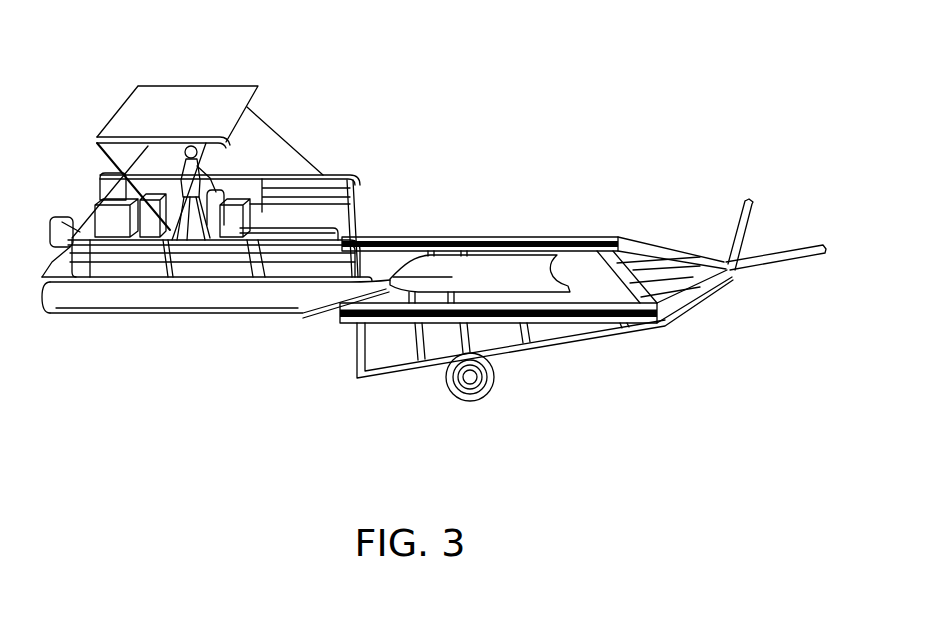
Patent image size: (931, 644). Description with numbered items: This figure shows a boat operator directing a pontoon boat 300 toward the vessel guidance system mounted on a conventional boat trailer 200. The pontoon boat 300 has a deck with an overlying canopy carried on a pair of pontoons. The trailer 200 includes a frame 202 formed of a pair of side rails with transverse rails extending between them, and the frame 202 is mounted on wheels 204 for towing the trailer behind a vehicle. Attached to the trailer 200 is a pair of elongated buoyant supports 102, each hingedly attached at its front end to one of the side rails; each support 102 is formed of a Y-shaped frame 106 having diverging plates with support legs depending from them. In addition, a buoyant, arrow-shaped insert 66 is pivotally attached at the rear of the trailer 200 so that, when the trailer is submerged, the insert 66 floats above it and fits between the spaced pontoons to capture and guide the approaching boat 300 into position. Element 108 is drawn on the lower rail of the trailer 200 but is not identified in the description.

The elongated buoyant support 102 is at (583, 310).
The Y-shaped frame 106 is at (566, 237).
The lower rail 108 is at (627, 324).
The boat trailer 200 is at (781, 251).
The frame 202 is at (676, 250).
The wheel 204 is at (470, 401).
The arrow-shaped insert 66 is at (507, 274).
The pontoon boat 300 is at (193, 314).